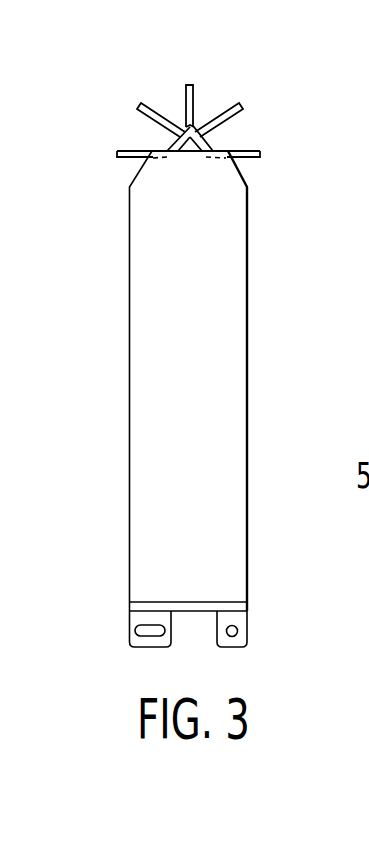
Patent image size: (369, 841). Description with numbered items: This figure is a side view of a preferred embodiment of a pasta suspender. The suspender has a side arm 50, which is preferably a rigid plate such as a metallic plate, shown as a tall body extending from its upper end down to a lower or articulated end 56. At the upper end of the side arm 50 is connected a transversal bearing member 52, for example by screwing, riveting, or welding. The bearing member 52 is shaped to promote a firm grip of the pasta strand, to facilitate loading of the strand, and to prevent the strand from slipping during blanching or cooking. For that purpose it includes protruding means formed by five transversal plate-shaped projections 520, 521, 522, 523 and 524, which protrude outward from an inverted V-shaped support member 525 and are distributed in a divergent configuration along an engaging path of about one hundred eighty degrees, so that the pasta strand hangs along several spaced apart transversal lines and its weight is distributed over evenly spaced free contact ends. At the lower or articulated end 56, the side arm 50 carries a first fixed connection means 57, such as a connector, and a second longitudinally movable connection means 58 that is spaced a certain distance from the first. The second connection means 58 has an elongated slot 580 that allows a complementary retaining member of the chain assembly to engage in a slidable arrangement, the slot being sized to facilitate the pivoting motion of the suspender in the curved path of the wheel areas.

The side arm 50 is at (258, 424).
The bearing member 52 is at (184, 79).
The transversal plate-shaped projection 520 is at (117, 155).
The transversal plate-shaped projection 521 is at (141, 117).
The transversal plate-shaped projection 522 is at (195, 90).
The transversal plate-shaped projection 523 is at (240, 115).
The transversal plate-shaped projection 524 is at (258, 153).
The inverted V-shaped support member 525 is at (187, 151).
The lower or articulated end 56 is at (180, 607).
The first fixed connection means 57 is at (240, 647).
The second longitudinally movable connection means 58 is at (189, 607).
The elongated slot 580 is at (155, 628).